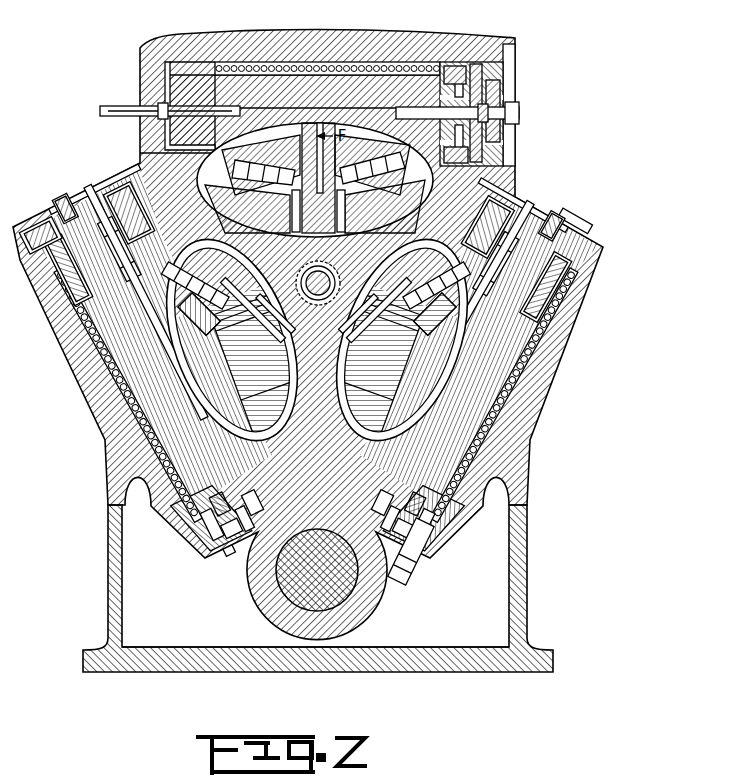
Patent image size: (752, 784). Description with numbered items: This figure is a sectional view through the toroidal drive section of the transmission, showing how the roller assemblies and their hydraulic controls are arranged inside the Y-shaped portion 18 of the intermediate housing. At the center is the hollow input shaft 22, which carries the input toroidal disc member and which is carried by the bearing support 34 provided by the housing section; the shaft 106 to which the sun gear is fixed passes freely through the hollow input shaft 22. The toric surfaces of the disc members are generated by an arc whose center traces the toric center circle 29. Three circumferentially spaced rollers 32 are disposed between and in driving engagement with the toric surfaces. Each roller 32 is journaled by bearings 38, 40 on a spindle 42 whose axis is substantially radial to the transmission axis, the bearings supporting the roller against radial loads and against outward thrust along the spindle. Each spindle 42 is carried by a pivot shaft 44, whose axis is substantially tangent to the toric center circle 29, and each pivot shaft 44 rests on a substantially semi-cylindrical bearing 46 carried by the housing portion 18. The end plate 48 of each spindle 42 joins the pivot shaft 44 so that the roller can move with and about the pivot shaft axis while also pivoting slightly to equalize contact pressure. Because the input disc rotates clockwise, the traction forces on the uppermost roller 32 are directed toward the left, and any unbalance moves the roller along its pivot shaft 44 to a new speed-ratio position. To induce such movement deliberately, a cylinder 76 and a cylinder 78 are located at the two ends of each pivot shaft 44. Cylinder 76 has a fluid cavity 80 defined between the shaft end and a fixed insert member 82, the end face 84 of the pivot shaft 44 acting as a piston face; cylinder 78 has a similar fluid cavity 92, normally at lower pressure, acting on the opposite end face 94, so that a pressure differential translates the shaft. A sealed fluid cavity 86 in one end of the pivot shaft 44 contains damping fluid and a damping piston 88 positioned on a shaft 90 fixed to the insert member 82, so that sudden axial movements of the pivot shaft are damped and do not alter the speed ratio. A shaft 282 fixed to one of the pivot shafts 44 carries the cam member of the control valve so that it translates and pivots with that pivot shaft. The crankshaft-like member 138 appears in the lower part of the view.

The Y-shaped portion 18 is at (345, 443).
The hollow input shaft 22 is at (338, 284).
The toric center circle 29 is at (164, 218).
The rollers 32 is at (360, 213).
The bearing support 34 is at (332, 263).
The bearing 38 is at (385, 174).
The bearing 40 is at (292, 208).
The spindle 42 is at (308, 221).
The pivot shaft 44 is at (330, 100).
The semi-cylindrical bearing 46 is at (388, 64).
The end plate 48 is at (319, 235).
The cylinder 76 is at (138, 63).
The cylinder 78 is at (124, 178).
The fluid cavity 80 is at (166, 68).
The insert member 82 is at (145, 92).
The end face 84 is at (488, 92).
The sealed fluid cavity 86 is at (448, 72).
The damping piston 88 is at (470, 66).
The shaft 90 is at (516, 114).
The fluid cavity 92 is at (62, 214).
The end face 94 is at (36, 222).
The shaft 106 is at (309, 280).
The crankshaft 138 is at (304, 590).
The shaft 282 is at (128, 117).